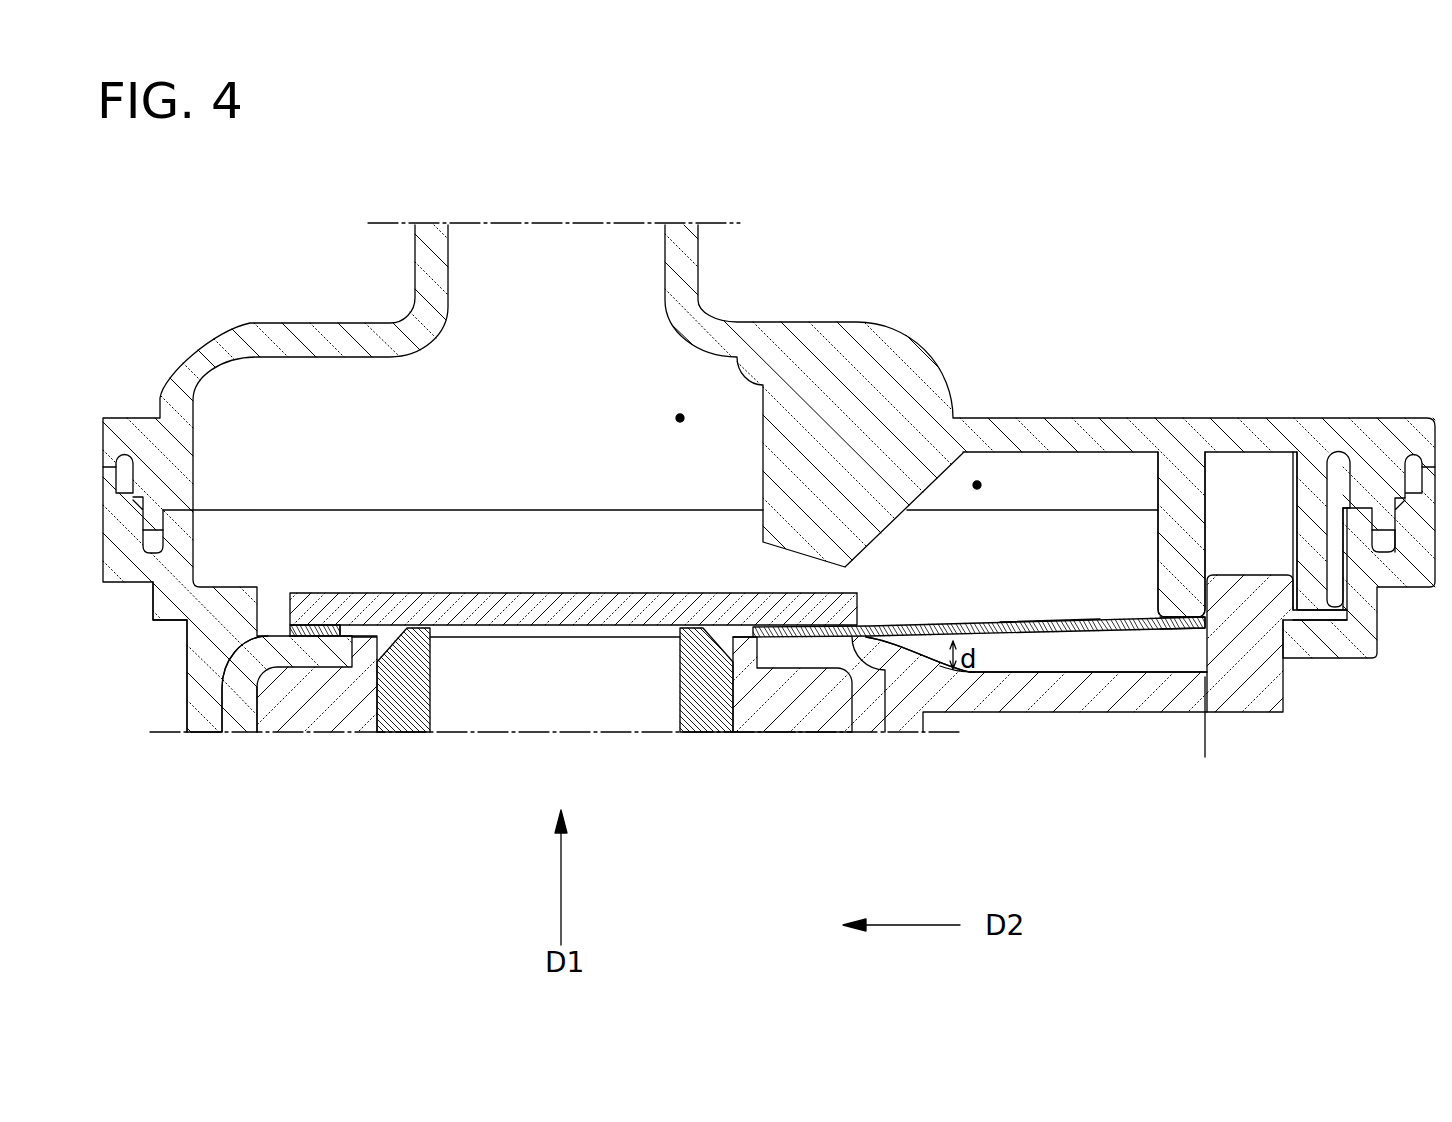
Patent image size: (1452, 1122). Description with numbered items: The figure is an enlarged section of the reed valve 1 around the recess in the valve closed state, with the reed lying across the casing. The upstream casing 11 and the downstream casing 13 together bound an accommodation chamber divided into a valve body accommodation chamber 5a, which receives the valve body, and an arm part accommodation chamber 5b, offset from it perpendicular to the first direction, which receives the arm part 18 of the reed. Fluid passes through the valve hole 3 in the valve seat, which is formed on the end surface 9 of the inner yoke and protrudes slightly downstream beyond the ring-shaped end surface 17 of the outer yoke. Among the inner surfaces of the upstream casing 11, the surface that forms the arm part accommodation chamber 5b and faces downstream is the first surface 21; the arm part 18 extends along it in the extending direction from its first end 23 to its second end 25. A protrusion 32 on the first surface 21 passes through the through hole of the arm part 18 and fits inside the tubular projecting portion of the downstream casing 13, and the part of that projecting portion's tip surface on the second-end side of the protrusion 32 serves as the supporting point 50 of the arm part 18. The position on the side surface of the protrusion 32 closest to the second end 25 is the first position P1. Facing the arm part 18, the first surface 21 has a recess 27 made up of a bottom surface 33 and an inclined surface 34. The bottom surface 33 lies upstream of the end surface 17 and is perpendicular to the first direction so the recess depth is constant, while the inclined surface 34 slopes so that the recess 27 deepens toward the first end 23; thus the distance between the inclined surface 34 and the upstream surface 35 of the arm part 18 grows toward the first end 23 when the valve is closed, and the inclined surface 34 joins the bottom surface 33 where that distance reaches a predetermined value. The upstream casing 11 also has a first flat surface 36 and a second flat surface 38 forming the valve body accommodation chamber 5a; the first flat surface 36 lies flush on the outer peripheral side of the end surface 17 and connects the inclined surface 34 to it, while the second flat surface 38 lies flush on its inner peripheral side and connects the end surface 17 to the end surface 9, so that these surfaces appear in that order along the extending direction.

The pump 1 is at (1290, 233).
The valve hole 3 is at (530, 642).
The valve body accommodation chamber 5a is at (684, 416).
The arm part accommodation chamber 5b is at (978, 483).
The end surface of inner yoke 9 is at (687, 612).
The upstream casing 11 is at (190, 713).
The downstream casing 13 is at (180, 371).
The end surface of outer yoke 17 is at (798, 638).
The arm part 18 is at (984, 622).
The first surface 21 is at (1120, 672).
The first end 23 is at (1350, 613).
The second end 25 is at (875, 620).
The recess 27 is at (968, 668).
The protrusion 32 is at (1247, 615).
The bottom surface 33 is at (1047, 672).
The inclined surface 34 is at (935, 650).
The upstream surface 35 is at (1047, 633).
The first flat surface 36 is at (866, 640).
The second flat surface 38 is at (705, 640).
The supporting point 50 is at (1178, 612).
The first position P1 is at (1207, 722).